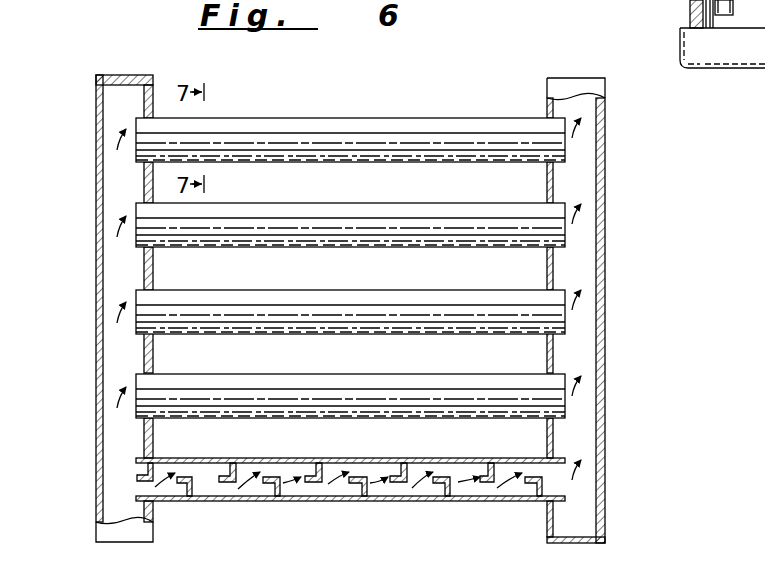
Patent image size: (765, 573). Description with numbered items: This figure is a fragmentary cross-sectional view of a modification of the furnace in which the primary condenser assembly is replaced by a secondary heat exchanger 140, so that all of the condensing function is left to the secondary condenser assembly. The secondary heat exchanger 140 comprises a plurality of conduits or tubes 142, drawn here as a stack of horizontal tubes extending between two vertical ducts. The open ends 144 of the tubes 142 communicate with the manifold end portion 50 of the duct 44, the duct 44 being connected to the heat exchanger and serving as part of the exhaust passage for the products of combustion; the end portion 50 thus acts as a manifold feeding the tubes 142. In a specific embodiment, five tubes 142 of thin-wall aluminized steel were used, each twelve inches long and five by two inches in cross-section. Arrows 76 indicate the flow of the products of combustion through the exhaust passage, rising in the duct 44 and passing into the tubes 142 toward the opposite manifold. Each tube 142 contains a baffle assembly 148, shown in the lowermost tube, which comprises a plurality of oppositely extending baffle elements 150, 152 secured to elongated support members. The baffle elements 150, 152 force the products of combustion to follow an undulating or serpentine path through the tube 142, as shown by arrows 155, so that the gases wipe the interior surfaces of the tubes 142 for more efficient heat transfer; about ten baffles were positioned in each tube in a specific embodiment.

The duct 44 is at (88, 430).
The end portion of duct 50 is at (97, 100).
The secondary heat exchanger 140 is at (640, 180).
The open ends of tubes 144 is at (170, 290).
The tubes 142 is at (350, 458).
The baffle assembly 148 is at (303, 502).
The baffle element 150 is at (231, 470).
The baffle element 152 is at (272, 487).
The arrows 155 is at (455, 503).
The arrows 76 is at (126, 232).